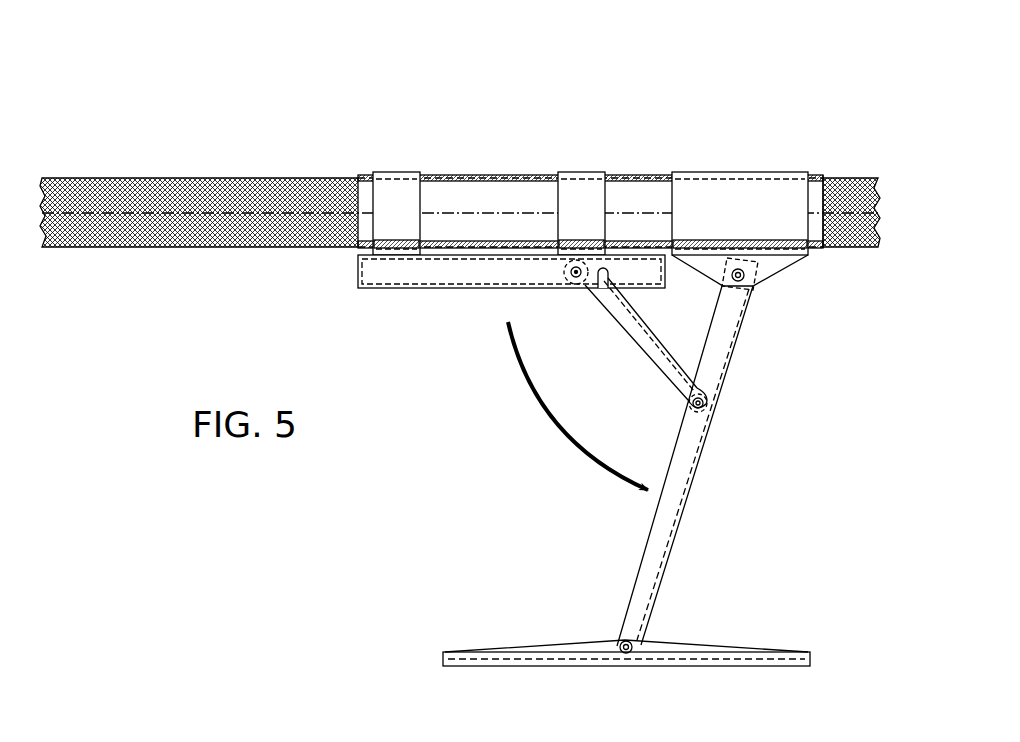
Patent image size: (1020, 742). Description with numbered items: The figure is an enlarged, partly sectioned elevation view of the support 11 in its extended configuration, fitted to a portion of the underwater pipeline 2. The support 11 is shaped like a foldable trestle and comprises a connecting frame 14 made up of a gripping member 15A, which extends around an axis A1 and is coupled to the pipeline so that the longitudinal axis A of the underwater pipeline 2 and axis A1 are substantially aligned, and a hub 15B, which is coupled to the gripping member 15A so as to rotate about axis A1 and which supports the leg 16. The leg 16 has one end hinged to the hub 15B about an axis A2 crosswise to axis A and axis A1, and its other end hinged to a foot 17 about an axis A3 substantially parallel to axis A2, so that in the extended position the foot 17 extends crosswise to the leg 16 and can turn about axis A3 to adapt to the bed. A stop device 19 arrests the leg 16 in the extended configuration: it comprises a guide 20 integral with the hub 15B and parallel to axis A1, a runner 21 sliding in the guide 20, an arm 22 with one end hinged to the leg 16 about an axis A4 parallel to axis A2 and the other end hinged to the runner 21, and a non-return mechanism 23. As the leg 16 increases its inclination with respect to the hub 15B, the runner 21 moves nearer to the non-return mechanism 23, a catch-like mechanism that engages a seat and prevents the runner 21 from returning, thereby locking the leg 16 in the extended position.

The underwater pipeline 2 is at (245, 190).
The longitudinal axis A is at (156, 212).
The axis A1 is at (318, 210).
The connecting frame 14 is at (594, 197).
The gripping member 15A is at (490, 172).
The hub 15B is at (731, 164).
The guide 20 is at (427, 278).
The non-return mechanism 23 is at (606, 279).
The support 11 is at (665, 484).
The leg 16 is at (699, 493).
The axis A2 is at (745, 275).
The stop device 19 is at (646, 344).
The arm 22 is at (652, 340).
The runner 21 is at (566, 279).
The axis A4 is at (708, 410).
The foot 17 is at (514, 661).
The axis A3 is at (620, 641).